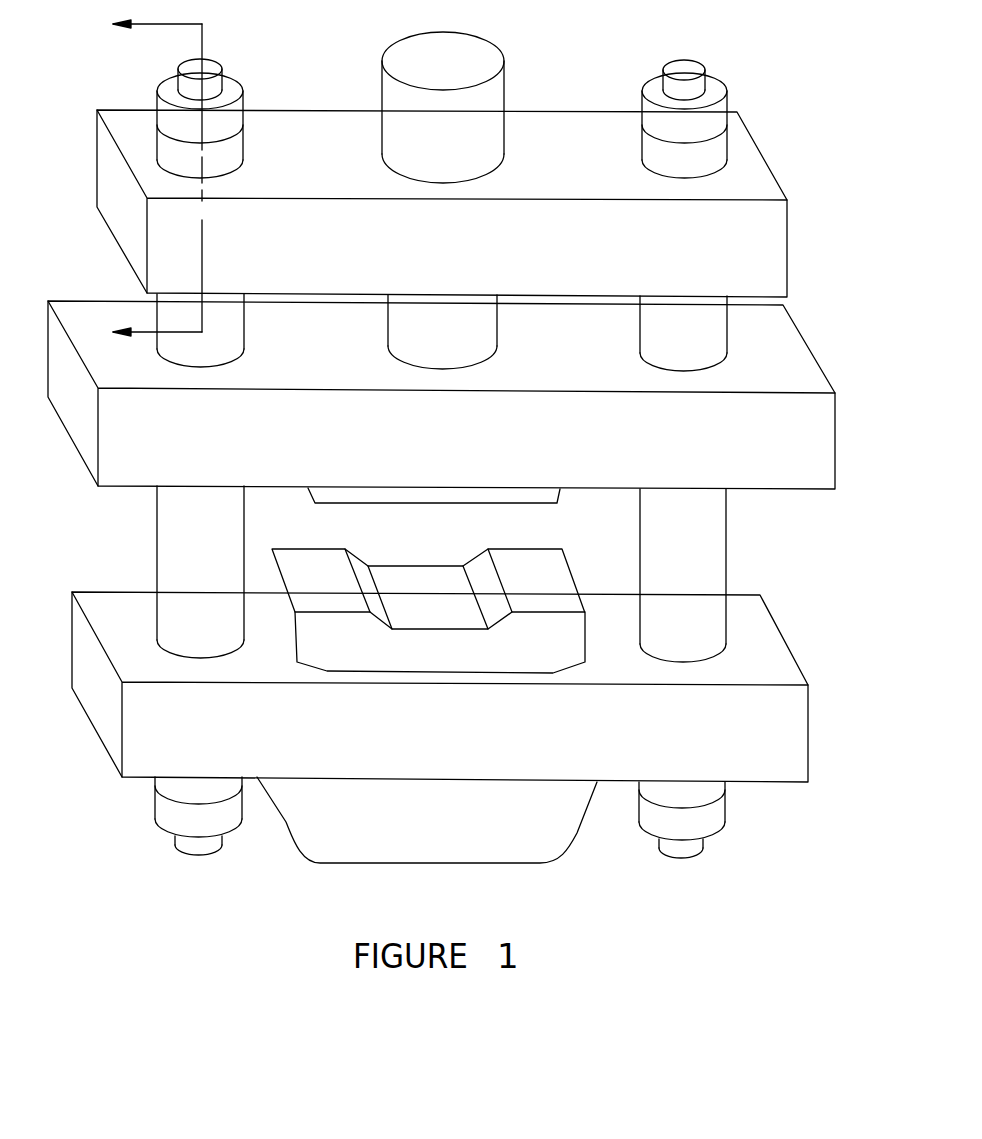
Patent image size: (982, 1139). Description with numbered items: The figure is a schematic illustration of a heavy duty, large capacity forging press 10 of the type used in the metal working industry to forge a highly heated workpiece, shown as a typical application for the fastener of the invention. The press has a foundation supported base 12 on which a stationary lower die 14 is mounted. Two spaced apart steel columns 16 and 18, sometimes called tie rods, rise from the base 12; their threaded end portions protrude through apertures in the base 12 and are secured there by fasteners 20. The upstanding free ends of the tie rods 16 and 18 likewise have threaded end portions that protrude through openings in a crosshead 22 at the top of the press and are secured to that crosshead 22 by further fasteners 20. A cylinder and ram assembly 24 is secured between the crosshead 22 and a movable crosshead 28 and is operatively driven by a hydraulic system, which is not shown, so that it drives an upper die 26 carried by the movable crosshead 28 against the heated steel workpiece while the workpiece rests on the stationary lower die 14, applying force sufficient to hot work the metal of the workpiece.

The forging press 10 is at (527, 82).
The base 12 is at (470, 758).
The stationary lower die 14 is at (550, 657).
The steel column 16 is at (173, 572).
The steel column 18 is at (700, 517).
The fastener 20 is at (240, 105).
The crosshead 22 is at (385, 267).
The cylinder and ram assembly 24 is at (458, 159).
The upper die 26 is at (543, 496).
The movable crosshead 28 is at (522, 457).